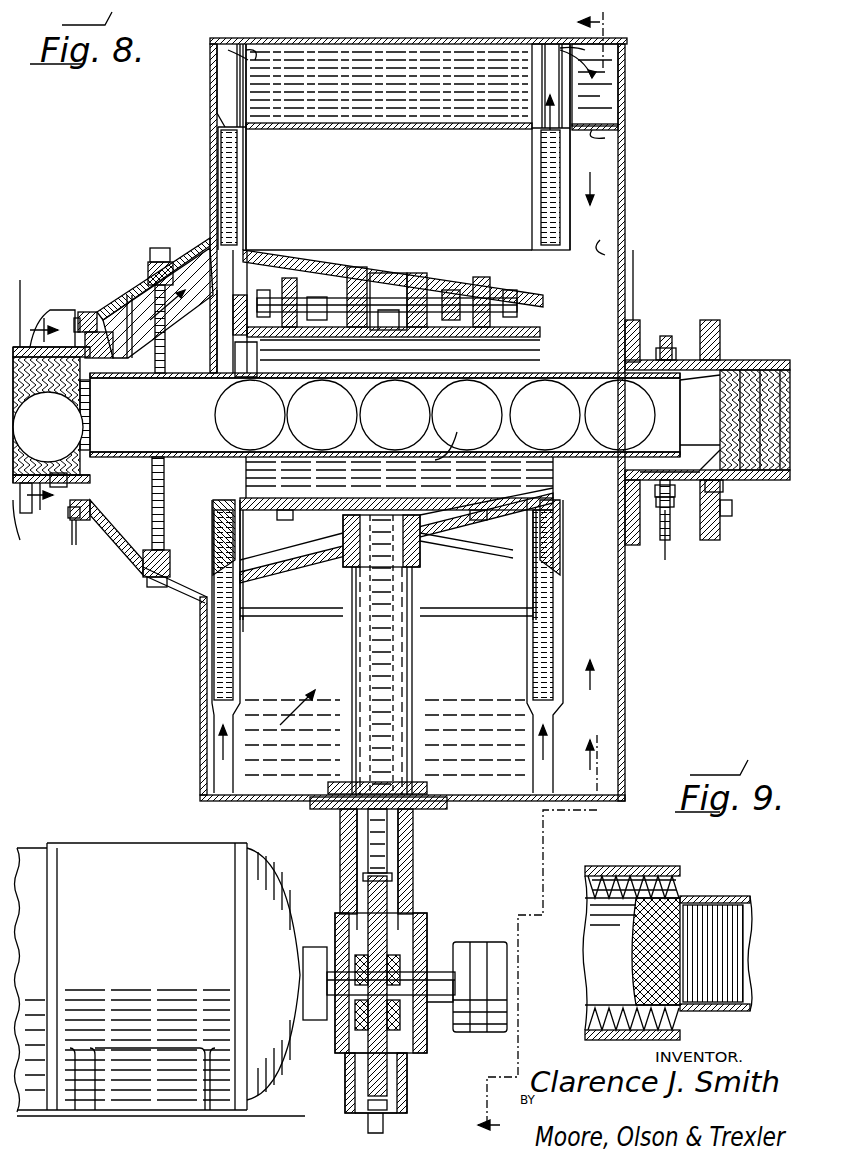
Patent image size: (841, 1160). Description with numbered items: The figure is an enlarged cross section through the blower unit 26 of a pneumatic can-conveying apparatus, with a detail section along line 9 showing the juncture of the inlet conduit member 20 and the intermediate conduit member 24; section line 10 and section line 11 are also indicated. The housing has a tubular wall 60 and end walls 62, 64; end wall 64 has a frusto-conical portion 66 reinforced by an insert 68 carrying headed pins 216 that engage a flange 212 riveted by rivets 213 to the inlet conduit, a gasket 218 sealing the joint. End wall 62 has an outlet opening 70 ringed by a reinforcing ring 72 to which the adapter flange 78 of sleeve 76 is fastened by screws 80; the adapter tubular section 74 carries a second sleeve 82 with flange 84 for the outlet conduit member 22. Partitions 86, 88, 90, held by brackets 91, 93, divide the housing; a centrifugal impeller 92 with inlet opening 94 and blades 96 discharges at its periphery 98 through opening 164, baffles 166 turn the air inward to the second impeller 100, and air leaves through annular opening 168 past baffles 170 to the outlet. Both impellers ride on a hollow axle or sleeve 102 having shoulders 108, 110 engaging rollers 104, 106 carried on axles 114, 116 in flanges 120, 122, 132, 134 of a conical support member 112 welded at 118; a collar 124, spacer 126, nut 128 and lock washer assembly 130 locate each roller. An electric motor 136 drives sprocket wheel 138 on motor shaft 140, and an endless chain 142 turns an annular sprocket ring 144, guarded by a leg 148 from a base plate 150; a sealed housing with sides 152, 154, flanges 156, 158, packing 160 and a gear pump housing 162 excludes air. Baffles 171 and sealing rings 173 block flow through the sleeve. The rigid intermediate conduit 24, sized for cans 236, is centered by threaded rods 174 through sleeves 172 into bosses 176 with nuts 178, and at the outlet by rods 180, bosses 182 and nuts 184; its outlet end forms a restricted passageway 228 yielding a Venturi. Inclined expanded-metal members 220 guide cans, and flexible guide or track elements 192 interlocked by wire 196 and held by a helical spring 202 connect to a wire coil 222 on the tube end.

In FIG. 8, the section line 9- 9 is at (48, 450).
In FIG. 8, the section line 10- 10 is at (605, 25).
In FIG. 8, the section line 11- 11 is at (34, 406).
In FIG. 8, the inlet conduit member 20 is at (20, 300).
In FIG. 8, the outlet conduit member 22 is at (765, 365).
In FIG. 8, the intermediate conduit member 24 is at (530, 372).
In FIG. 9, the intermediate conduit member 24 is at (720, 896).
In FIG. 8, the blower unit 26 is at (385, 36).
In FIG. 8, the tubular wall 60 is at (455, 22).
In FIG. 8, the end wall 62 is at (625, 100).
In FIG. 8, the end wall 64 is at (210, 116).
In FIG. 8, the frusto-conical portion 66 is at (150, 290).
In FIG. 8, the insert 68 is at (96, 312).
In FIG. 8, the outlet opening 70 is at (625, 300).
In FIG. 8, the reinforcing ring 72 is at (628, 320).
In FIG. 8, the tubular section 74 is at (704, 360).
In FIG. 8, the sleeve 76 is at (666, 336).
In FIG. 8, the annular flange 78 is at (630, 366).
In FIG. 8, the screws 80 is at (640, 320).
In FIG. 8, the second sleeve 82 is at (668, 540).
In FIG. 8, the radially extending flange 84 is at (710, 535).
In FIG. 8, the partition 86 is at (250, 152).
In FIG. 8, the partition 88 is at (535, 172).
In FIG. 8, the partition 90 is at (572, 158).
In FIG. 8, the brackets 91 is at (218, 58).
In FIG. 8, the centrifugal impeller 92 is at (218, 150).
In FIG. 8, the brackets 93 is at (600, 68).
In FIG. 8, the central inlet opening 94 is at (190, 262).
In FIG. 8, the radially extending blades 96 is at (200, 262).
In FIG. 8, the impeller periphery discharge 98 is at (218, 92).
In FIG. 8, the second centrifugal impeller 100 is at (540, 158).
In FIG. 8, the axle or sleeve 102 is at (325, 337).
In FIG. 8, the rollers 104 is at (325, 250).
In FIG. 8, the rollers 106 is at (462, 560).
In FIG. 8, the annular shoulder 108 is at (305, 337).
In FIG. 8, the annular shoulder 110 is at (553, 424).
In FIG. 8, the conical support member 112 is at (288, 278).
In FIG. 8, the axle 114 is at (380, 296).
In FIG. 8, the axle 116 is at (478, 290).
In FIG. 8, the weld 118 is at (250, 250).
In FIG. 8, the annular flange 120 is at (357, 267).
In FIG. 8, the annular flange 122 is at (445, 290).
In FIG. 8, the collar 124 is at (415, 273).
In FIG. 8, the spacer 126 is at (372, 280).
In FIG. 8, the nut 128 is at (240, 290).
In FIG. 8, the lock washer assembly 130 is at (272, 337).
In FIG. 8, the annular flange 132 is at (420, 337).
In FIG. 8, the annular flange 134 is at (448, 458).
In FIG. 8, the electric motor 136 is at (72, 843).
In FIG. 8, the sprocket wheel 138 is at (400, 1075).
In FIG. 8, the motor shaft 140 is at (325, 1020).
In FIG. 8, the endless chain 142 is at (400, 845).
In FIG. 8, the annular sprocket ring 144 is at (425, 555).
In FIG. 8, the guard leg 148 is at (415, 700).
In FIG. 8, the base plate 150 is at (430, 788).
In FIG. 8, the housing side 152 is at (410, 880).
In FIG. 8, the housing side 154 is at (350, 850).
In FIG. 8, the upper flange 156 is at (447, 806).
In FIG. 8, the upper flange 158 is at (340, 818).
In FIG. 8, the airtight packing 160 is at (350, 960).
In FIG. 8, the gear pump housing 162 is at (468, 942).
In FIG. 8, the opening 164 is at (250, 50).
In FIG. 8, the baffles 166 is at (385, 132).
In FIG. 8, the annular opening 168 is at (556, 44).
In FIG. 8, the baffles 170 is at (612, 136).
In FIG. 8, the baffles 171 is at (290, 478).
In FIG. 8, the apertured sleeves 172 is at (143, 568).
In FIG. 8, the sealing rings 173 is at (262, 500).
In FIG. 8, the threaded rod 174 is at (140, 555).
In FIG. 8, the nut or boss 176 is at (167, 490).
In FIG. 8, the nut 178 is at (147, 585).
In FIG. 8, the threaded rods 180 is at (672, 560).
In FIG. 8, the bosses 182 is at (640, 478).
In FIG. 8, the nuts 184 is at (680, 560).
In FIG. 9, the guide or track elements 192 is at (580, 892).
In FIG. 8, the wire 196 is at (508, 290).
In FIG. 9, the helical spring 202 is at (655, 876).
In FIG. 8, the flange 212 is at (60, 545).
In FIG. 8, the rivets 213 is at (60, 505).
In FIG. 8, the headed pins 216 is at (90, 312).
In FIG. 8, the gasket 218 is at (78, 310).
In FIG. 8, the inclined members 220 is at (650, 440).
In FIG. 9, the inclined members 220 is at (636, 950).
In FIG. 9, the wire coil 222 is at (690, 898).
In FIG. 8, the restricted passageway 228 is at (655, 372).
In FIG. 8, the cans or articles 236 is at (214, 416).